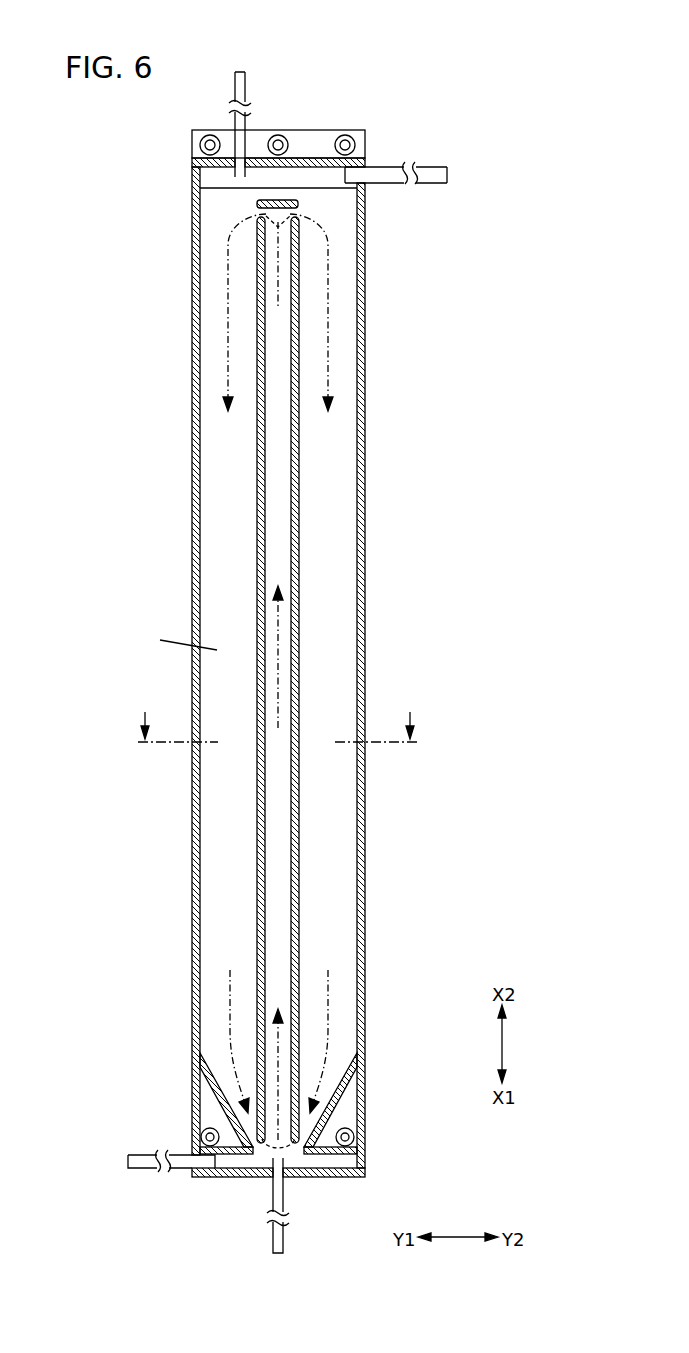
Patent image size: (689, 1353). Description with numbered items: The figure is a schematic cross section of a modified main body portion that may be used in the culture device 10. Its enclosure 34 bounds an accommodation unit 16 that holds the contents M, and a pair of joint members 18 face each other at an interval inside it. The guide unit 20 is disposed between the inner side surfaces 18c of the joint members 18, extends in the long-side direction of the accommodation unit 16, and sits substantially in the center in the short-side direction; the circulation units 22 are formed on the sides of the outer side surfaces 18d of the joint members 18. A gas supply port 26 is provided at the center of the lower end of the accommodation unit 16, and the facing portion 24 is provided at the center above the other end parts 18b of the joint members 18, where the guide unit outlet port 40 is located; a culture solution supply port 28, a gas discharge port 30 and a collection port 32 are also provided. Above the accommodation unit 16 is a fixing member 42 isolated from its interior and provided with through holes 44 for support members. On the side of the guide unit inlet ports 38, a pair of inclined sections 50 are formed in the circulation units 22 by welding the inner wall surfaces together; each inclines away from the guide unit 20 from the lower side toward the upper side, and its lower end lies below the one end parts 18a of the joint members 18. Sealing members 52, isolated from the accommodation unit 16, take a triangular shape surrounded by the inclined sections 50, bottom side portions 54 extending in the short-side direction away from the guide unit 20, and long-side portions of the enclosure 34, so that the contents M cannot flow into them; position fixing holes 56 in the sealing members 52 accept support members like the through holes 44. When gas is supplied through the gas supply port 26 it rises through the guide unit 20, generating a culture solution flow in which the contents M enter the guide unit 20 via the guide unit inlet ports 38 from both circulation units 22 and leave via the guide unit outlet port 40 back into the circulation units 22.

The culture device 10 is at (480, 84).
The accommodation unit 16 is at (317, 190).
The joint member 18 is at (295, 798).
The one end part 18a is at (295, 1135).
The other end part 18b is at (295, 214).
The inner side surface 18c is at (262, 540).
The outer side surface 18d is at (296, 498).
The guide unit 20 is at (272, 767).
The circulation unit 22 is at (208, 305).
The facing portion 24 is at (278, 199).
The gas supply port 26 is at (272, 1182).
The culture solution supply port 28 is at (360, 178).
The gas discharge port 30 is at (238, 168).
The collection port 32 is at (195, 1163).
The enclosure 34 is at (362, 659).
The guide unit inlet port 38 is at (300, 1137).
The guide unit outlet port 40 is at (257, 203).
The fixing member 42 is at (356, 146).
The through hole 44 is at (199, 146).
The inclined section 50 is at (275, 1140).
The sealing member 52 is at (203, 1097).
The bottom side portion 54 is at (228, 1156).
The position fixing hole 56 is at (201, 1136).